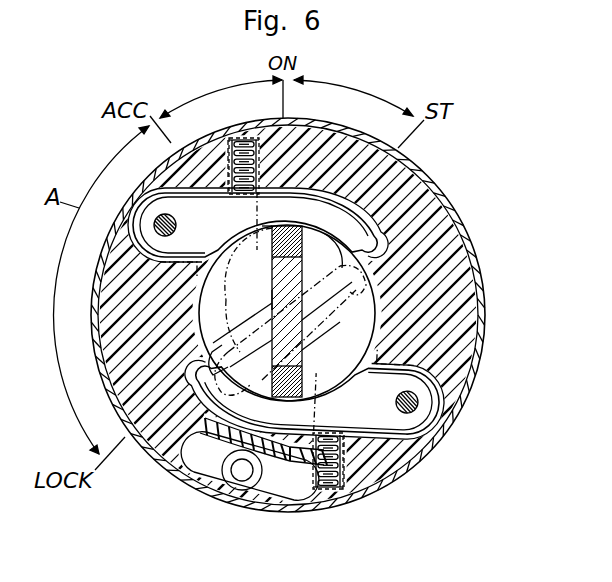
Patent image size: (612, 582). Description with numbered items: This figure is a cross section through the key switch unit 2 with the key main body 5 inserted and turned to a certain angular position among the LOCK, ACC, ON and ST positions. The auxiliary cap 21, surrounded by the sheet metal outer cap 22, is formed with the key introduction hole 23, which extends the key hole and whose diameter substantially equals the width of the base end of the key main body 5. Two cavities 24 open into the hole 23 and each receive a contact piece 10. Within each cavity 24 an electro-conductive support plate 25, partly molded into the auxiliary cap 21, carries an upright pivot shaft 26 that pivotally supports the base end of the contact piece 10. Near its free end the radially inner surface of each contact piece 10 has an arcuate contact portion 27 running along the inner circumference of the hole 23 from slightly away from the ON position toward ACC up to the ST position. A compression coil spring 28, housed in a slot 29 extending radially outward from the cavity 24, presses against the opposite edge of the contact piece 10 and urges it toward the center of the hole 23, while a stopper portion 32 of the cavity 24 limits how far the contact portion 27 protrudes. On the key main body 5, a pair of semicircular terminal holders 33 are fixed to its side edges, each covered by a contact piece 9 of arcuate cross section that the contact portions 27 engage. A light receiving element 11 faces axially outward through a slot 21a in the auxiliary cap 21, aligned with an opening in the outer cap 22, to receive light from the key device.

The key switch unit 2 is at (487, 348).
The key main body 5 is at (310, 318).
The contact piece 9 is at (272, 236).
The contact piece 10 is at (398, 212).
The light receiving element 11 is at (242, 490).
The auxiliary cap 21 is at (462, 220).
The slot 21a is at (194, 472).
The outer cap 22 is at (482, 278).
The key introduction hole 23 is at (252, 363).
The cavity 24 is at (358, 198).
The support plate 25 is at (221, 324).
The pivot shaft 26 is at (157, 217).
The contact portion 27 is at (271, 296).
The compression coil spring 28 is at (228, 163).
The slot 29 is at (252, 140).
The stopper portion 32 is at (324, 268).
The terminal holder 33 is at (278, 256).